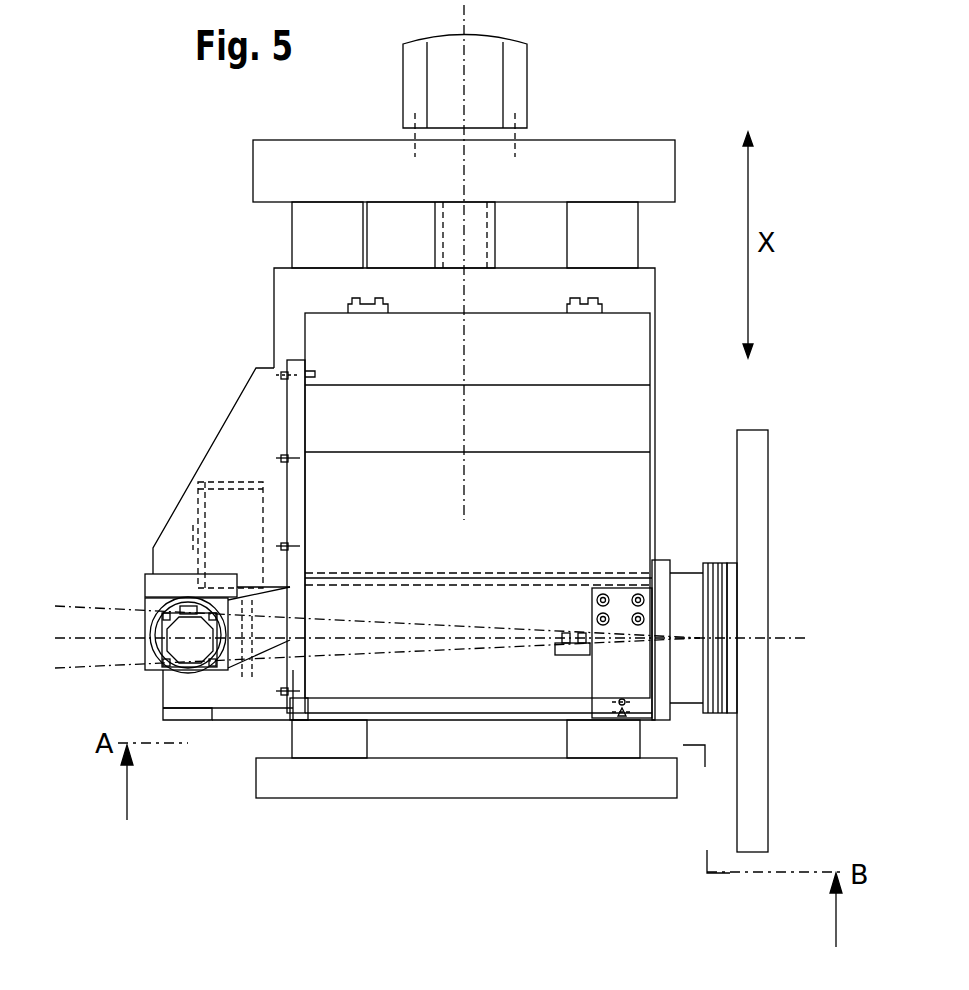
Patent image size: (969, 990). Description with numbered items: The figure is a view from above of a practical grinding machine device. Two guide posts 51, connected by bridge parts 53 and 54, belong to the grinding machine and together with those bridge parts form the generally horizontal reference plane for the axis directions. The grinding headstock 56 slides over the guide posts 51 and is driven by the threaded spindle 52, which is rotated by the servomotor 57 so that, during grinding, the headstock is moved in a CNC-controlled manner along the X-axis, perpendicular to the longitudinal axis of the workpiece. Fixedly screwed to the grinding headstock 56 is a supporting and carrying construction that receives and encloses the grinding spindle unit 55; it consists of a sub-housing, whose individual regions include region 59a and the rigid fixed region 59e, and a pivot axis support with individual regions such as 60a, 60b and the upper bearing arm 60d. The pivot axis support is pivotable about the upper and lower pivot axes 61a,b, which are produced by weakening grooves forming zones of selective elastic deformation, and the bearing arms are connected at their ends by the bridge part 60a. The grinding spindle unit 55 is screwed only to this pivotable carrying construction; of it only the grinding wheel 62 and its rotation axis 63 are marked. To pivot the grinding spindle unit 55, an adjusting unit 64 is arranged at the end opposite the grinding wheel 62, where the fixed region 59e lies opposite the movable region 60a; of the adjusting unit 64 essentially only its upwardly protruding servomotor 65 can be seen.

The guide posts 51 is at (308, 238).
The threaded spindle 52 is at (452, 245).
The bridge part 53 is at (612, 155).
The bridge part 54 is at (467, 778).
The grinding spindle unit 55 is at (492, 678).
The grinding headstock 56 is at (610, 510).
The servomotor 57 is at (490, 78).
The individual region of the sub-housing 59a is at (243, 420).
The fixed region of the sub-housing 59e is at (178, 583).
The bridge part of the pivot axis support 60a is at (190, 712).
The individual region of the pivot axis support 60b is at (253, 712).
The upper bearing arm 60d is at (415, 712).
The upper and lower pivot axes 61a,b is at (630, 720).
The grinding wheel 62 is at (753, 490).
The rotation axis 63 is at (787, 638).
The adjusting unit 64 is at (158, 612).
The servomotor 65 is at (182, 652).